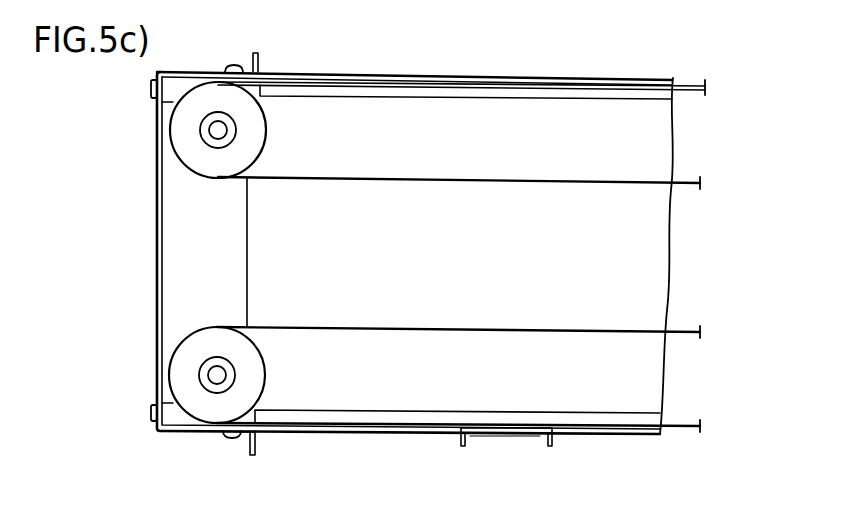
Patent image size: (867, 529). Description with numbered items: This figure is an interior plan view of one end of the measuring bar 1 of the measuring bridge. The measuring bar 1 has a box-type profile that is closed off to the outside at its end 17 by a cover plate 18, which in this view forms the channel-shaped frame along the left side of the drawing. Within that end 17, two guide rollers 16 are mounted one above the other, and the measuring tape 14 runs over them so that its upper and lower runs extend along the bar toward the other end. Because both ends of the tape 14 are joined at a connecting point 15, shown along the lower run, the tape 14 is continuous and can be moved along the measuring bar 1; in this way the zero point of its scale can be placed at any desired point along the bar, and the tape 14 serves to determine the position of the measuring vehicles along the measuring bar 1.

The measuring bar 1 is at (452, 264).
The measuring tape 14 is at (346, 88).
The connecting point 15 is at (546, 437).
The guide rollers 16 is at (264, 130).
The ends of the measuring bar 17 is at (247, 243).
The cover plate 18 is at (157, 243).